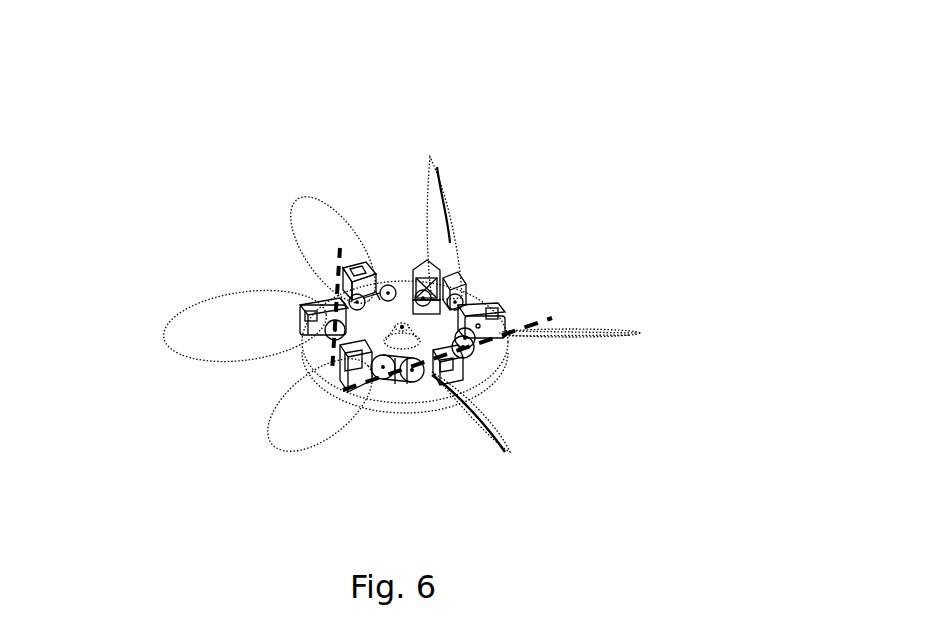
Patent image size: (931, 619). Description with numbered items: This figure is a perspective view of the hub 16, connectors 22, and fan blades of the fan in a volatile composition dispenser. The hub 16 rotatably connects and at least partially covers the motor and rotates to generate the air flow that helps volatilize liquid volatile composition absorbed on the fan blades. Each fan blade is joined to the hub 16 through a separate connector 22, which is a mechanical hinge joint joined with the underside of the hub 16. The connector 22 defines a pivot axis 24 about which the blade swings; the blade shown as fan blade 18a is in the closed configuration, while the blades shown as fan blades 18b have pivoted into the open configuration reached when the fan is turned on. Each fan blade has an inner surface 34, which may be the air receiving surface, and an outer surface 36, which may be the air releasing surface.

The hub 16 is at (406, 283).
The fan blade in closed configuration 18a is at (432, 157).
The fan blades in open configuration 18b is at (238, 317).
The connector 22 is at (456, 258).
The pivot axis 24 is at (340, 293).
The inner surface 34 is at (335, 239).
The outer surface 36 is at (570, 337).